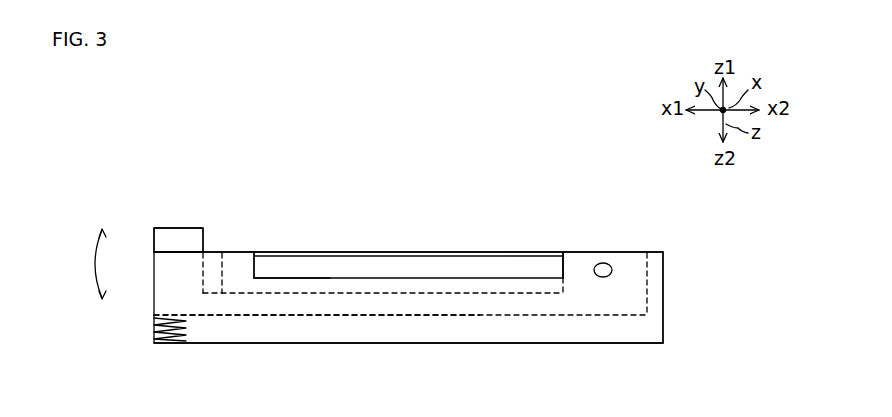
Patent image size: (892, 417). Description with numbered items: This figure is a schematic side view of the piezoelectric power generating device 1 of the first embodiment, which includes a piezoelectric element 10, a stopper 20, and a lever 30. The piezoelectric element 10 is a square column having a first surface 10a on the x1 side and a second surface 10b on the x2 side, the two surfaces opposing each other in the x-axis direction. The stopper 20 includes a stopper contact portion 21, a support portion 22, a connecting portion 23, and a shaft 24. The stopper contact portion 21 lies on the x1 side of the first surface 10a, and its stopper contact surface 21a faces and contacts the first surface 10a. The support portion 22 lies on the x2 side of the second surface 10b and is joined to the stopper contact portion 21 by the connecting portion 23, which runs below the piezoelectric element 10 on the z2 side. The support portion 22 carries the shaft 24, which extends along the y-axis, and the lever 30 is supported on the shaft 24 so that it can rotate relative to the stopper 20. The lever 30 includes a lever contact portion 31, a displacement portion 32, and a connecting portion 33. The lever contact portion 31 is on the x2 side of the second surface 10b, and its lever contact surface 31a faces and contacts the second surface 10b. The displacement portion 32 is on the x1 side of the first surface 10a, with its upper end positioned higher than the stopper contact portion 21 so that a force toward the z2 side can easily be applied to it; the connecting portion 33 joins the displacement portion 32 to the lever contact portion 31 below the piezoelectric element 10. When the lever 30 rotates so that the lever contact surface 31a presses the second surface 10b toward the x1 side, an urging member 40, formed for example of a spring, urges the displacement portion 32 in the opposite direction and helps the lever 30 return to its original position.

The piezoelectric power generating device 1 is at (579, 156).
The piezoelectric element 10 is at (468, 250).
The first surface 10a is at (254, 264).
The second surface 10b is at (565, 258).
The stopper 20 is at (526, 345).
The stopper contact portion 21 is at (233, 251).
The stopper contact surface 21a is at (256, 263).
The support portion 22 is at (664, 308).
The connecting portion 23 is at (465, 344).
The shaft 24 is at (603, 277).
The lever 30 is at (151, 242).
The lever contact portion 31 is at (650, 274).
The lever contact surface 31a is at (562, 270).
The displacement portion 32 is at (170, 227).
The connecting portion 33 is at (318, 317).
The urging member 40 is at (170, 344).